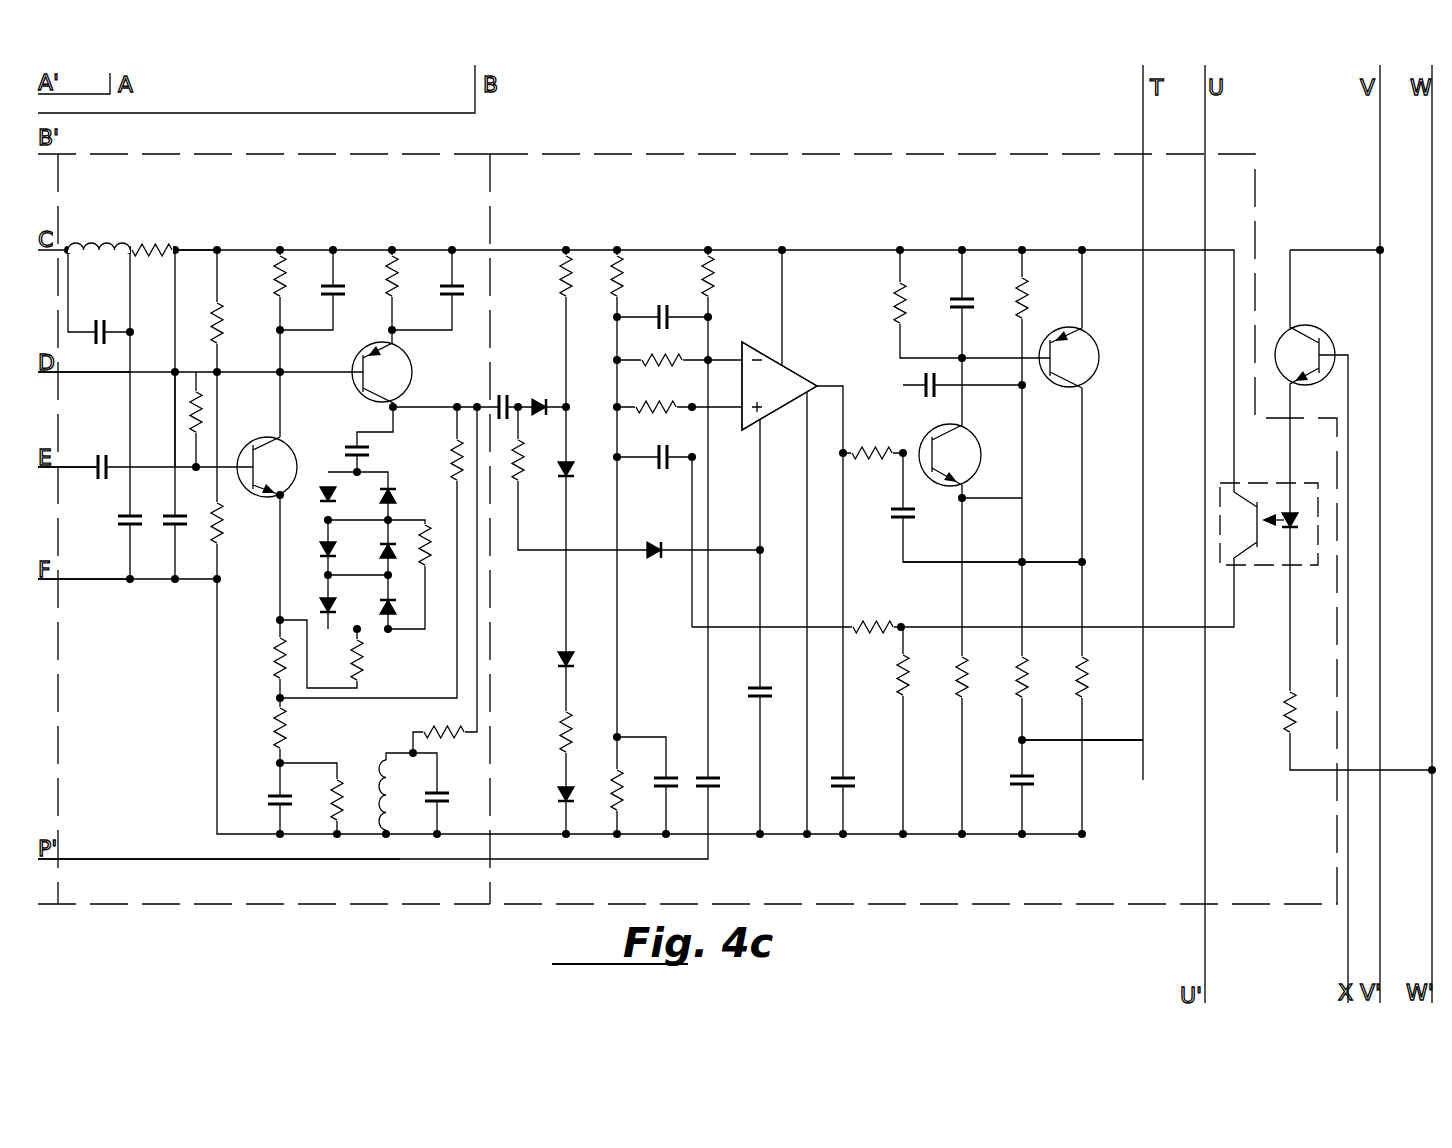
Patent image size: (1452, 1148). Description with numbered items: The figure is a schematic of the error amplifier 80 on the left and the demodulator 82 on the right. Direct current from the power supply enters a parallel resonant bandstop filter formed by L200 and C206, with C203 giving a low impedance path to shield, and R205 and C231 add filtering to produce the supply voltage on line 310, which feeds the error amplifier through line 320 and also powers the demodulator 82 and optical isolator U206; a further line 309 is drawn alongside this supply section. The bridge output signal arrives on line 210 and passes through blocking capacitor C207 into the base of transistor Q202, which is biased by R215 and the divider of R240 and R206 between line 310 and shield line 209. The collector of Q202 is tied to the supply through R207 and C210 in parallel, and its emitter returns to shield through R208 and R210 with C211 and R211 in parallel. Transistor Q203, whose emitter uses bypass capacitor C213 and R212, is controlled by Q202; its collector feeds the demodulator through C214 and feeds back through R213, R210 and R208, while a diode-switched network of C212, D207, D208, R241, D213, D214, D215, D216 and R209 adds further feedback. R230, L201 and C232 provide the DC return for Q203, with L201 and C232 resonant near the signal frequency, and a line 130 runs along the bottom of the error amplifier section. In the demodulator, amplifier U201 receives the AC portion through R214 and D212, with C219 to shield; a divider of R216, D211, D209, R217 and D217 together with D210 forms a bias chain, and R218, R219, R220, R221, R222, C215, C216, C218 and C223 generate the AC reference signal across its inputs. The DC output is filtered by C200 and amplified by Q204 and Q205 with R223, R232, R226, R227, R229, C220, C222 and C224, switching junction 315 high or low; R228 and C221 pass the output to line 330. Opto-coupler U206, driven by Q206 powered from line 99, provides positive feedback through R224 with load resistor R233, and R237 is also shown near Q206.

The error amplifier 80 is at (345, 191).
The demodulator 82 is at (923, 191).
The voltage supply line 99 is at (1378, 195).
The line P' 130 is at (163, 858).
The shield line 209 is at (86, 582).
The line 210 is at (78, 492).
The line 309 is at (175, 442).
The power supply line 310 is at (105, 378).
The junction 315 is at (1022, 560).
The line 320 is at (212, 250).
The line 330 is at (1108, 742).
The inductor L200 is at (92, 250).
The inductor L201 is at (373, 795).
The resistor R205 is at (152, 250).
The resistor R206 is at (245, 534).
The resistor R207 is at (274, 281).
The resistor R208 is at (275, 656).
The resistor R209 is at (366, 665).
The resistor R210 is at (275, 728).
The resistor R211 is at (339, 785).
The resistor R212 is at (392, 284).
The resistor R213 is at (455, 460).
The input resistor R214 is at (544, 478).
The resistor R215 is at (200, 410).
The resistor R216 is at (560, 278).
The resistor R217 is at (565, 725).
The resistor R218 is at (622, 280).
The resistor R219 is at (615, 787).
The resistor R220 is at (668, 358).
The resistor R221 is at (656, 405).
The resistor R222 is at (712, 280).
The resistor R223 is at (868, 450).
The resistor R224 is at (875, 622).
The load resistor R226 is at (960, 686).
The resistor R227 is at (1027, 300).
The resistor R228 is at (1018, 678).
The load resistor R229 is at (1078, 678).
The resistor R230 is at (430, 732).
The resistor R232 is at (896, 300).
The load resistor R233 is at (900, 686).
The resistor R237 is at (1288, 700).
The resistor R240 is at (222, 335).
The resistor R241 is at (425, 538).
The capacitor C200 is at (848, 777).
The capacitor C203 is at (125, 531).
The capacitor C206 is at (100, 328).
The blocking capacitor C207 is at (105, 443).
The capacitor C210 is at (333, 290).
The by-pass capacitor C211 is at (276, 800).
The capacitor C212 is at (352, 446).
The emitter bypass capacitor C213 is at (452, 292).
The capacitor C214 is at (505, 397).
The capacitor C215 is at (664, 314).
The capacitor C216 is at (660, 462).
The capacitor C218 is at (716, 780).
The capacitor C219 is at (755, 692).
The capacitor C220 is at (897, 512).
The capacitor C221 is at (1015, 780).
The capacitor C222 is at (922, 380).
The capacitor C223 is at (668, 778).
The capacitor C224 is at (990, 288).
The capacitor C231 is at (178, 540).
The capacitor C232 is at (443, 797).
The diode D207 is at (325, 498).
The diode D208 is at (392, 496).
The diode D209 is at (562, 656).
The diode D210 is at (541, 398).
The diode D211 is at (572, 462).
The diode D212 is at (656, 556).
The diode D213 is at (325, 553).
The diode D214 is at (385, 553).
The diode D215 is at (325, 607).
The diode D216 is at (385, 607).
The diode D217 is at (565, 790).
The transistor Q202 is at (256, 448).
The transistor Q203 is at (412, 362).
The transistor Q204 is at (965, 448).
The transistor Q205 is at (1095, 380).
The transistor Q206 is at (1300, 328).
The amplifier U201 is at (777, 373).
The optical isolator U206 is at (1281, 568).